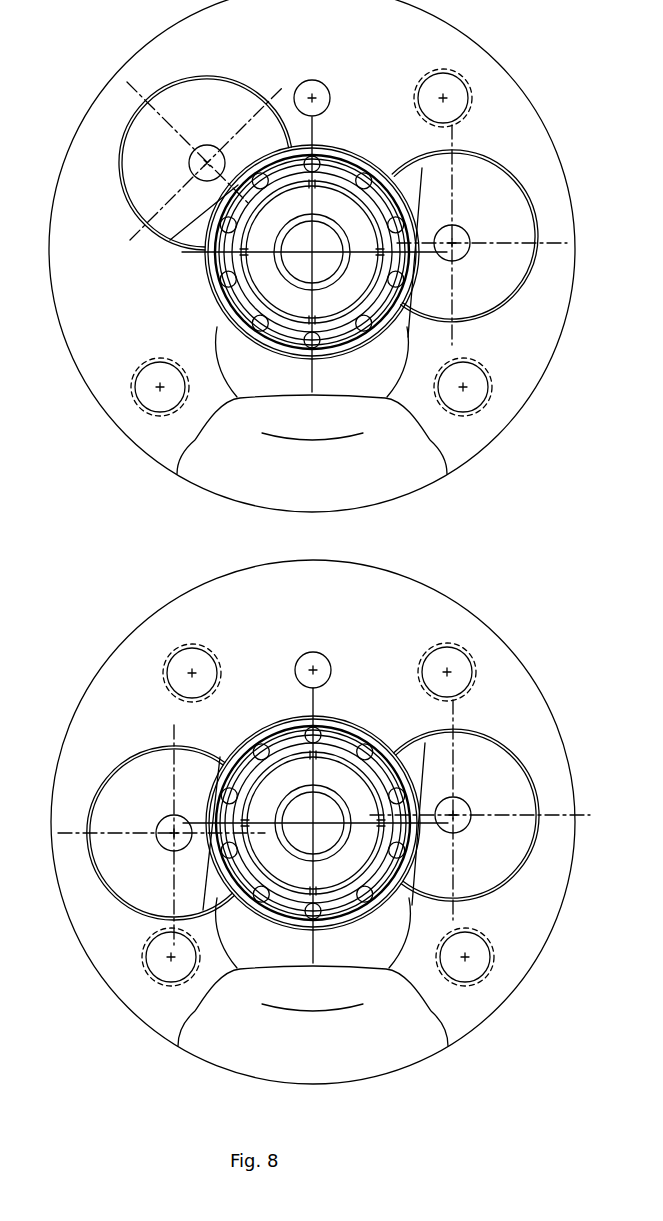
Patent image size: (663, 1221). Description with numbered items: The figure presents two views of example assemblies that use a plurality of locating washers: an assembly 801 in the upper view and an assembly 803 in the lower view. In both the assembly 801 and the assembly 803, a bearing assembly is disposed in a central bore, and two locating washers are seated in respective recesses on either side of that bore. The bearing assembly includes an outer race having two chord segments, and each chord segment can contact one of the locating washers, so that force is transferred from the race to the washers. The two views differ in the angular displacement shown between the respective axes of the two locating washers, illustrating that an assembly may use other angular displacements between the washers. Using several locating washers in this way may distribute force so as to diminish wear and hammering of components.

The assembly 801 is at (116, 48).
The assembly 803 is at (101, 622).